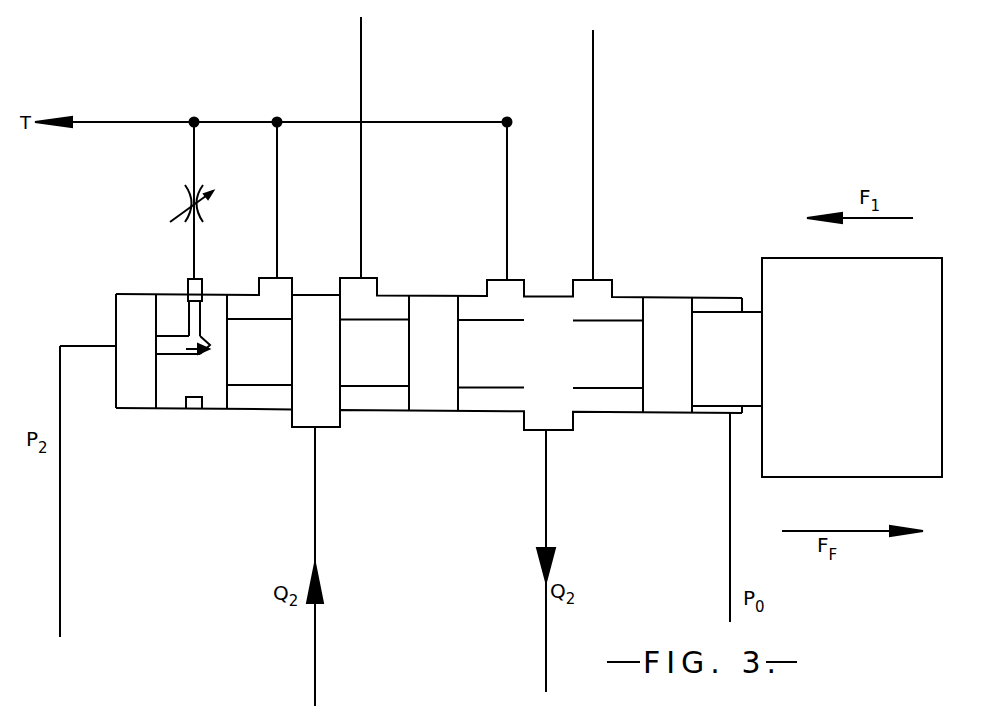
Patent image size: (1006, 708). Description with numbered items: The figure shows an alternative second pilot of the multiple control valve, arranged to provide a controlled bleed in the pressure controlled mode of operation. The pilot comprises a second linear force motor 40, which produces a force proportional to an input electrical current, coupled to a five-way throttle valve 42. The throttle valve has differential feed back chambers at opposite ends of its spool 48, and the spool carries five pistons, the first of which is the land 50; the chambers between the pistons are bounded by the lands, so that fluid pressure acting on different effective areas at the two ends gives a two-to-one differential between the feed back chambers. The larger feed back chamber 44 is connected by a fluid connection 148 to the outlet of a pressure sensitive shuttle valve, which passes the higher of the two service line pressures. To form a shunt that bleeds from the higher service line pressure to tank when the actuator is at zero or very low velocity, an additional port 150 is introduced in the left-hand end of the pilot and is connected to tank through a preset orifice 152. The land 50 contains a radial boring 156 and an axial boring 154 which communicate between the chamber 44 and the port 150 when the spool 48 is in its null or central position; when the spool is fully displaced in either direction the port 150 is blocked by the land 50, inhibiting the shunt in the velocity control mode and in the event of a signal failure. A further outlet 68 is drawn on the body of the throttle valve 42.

The second linear force motor 40 is at (945, 262).
The 5-way throttle valve 42 is at (113, 322).
The feed back chamber 44 is at (143, 395).
The spool 48 is at (240, 380).
The land 50 is at (166, 396).
The outlet port 68 is at (318, 428).
The fluid connection 148 is at (60, 516).
The additional port 150 is at (189, 280).
The preset orifice 152 is at (186, 205).
The axial boring 154 is at (193, 353).
The radial boring 156 is at (190, 318).